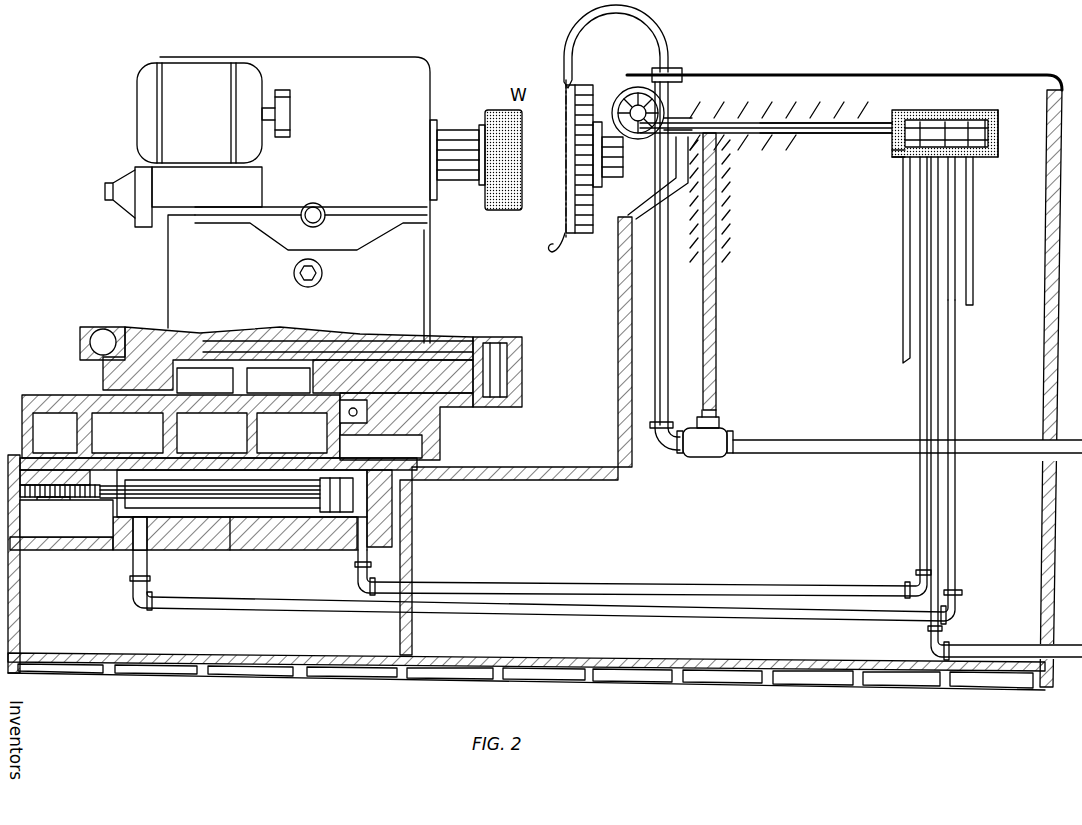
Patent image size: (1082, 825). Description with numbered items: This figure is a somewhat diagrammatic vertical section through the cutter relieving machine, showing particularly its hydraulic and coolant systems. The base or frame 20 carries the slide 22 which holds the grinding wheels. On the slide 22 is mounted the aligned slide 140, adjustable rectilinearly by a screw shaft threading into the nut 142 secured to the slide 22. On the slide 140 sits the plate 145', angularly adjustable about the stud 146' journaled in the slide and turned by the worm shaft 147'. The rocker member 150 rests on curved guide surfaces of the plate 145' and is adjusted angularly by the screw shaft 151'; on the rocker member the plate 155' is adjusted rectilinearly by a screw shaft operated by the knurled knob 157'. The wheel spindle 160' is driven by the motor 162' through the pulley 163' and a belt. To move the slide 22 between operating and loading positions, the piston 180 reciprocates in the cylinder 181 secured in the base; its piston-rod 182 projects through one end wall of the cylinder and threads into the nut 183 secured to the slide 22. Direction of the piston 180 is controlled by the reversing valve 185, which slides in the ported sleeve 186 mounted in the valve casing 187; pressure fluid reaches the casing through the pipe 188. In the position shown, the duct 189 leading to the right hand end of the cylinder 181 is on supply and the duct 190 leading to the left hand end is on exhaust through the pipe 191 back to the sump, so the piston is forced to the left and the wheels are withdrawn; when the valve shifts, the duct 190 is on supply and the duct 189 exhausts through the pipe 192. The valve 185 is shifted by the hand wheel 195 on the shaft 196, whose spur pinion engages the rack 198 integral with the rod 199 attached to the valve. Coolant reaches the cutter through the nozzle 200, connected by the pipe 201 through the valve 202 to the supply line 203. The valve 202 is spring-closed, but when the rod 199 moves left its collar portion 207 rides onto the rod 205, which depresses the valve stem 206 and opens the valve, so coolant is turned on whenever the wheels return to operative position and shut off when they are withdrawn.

The base or frame 20 is at (710, 670).
The slide 22 is at (442, 431).
The slide 140 is at (105, 368).
The nut 142 is at (292, 433).
The plate 145' is at (296, 350).
The stud 146' is at (521, 372).
The worm shaft 147' is at (111, 327).
The rocker member 150 is at (430, 220).
The screw shaft 151' is at (329, 275).
The plate 155' is at (311, 215).
The knurled knob 157' is at (335, 222).
The drive shaft 160' is at (457, 140).
The motor 162' is at (183, 125).
The pulley 163' is at (299, 113).
The piston 180 is at (341, 551).
The cylinder 181 is at (230, 540).
The piston-rod 182 is at (192, 540).
The nut 183 is at (55, 510).
The reversing valve 185 is at (932, 112).
The ported sleeve 186 is at (975, 112).
The valve casing 187 is at (892, 150).
The pipe 188 is at (940, 335).
The duct 189 is at (915, 538).
The duct 190 is at (958, 381).
The pipe 191 is at (975, 165).
The pipe 192 is at (905, 160).
The hand wheel 195 is at (604, 95).
The shaft 196 is at (670, 80).
The rack 198 is at (678, 112).
The rod 199 is at (782, 121).
The nozzle 200 is at (566, 48).
The pipe 201 is at (660, 370).
The valve 202 is at (707, 452).
The supply line 203 is at (818, 441).
The rod 205 is at (716, 340).
The valve stem 206 is at (713, 420).
The collar portion 207 is at (742, 120).